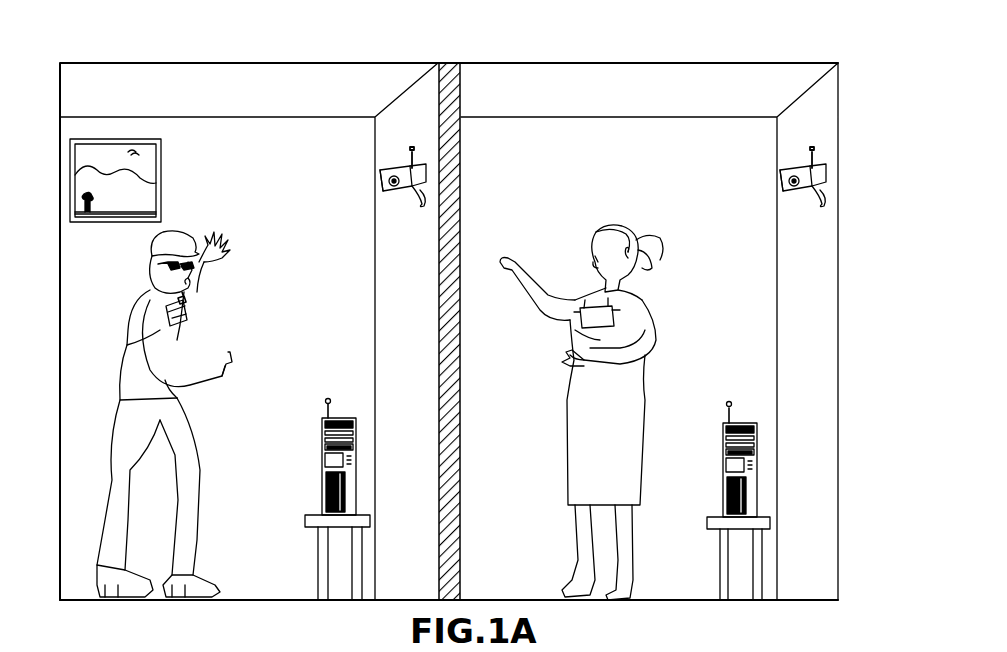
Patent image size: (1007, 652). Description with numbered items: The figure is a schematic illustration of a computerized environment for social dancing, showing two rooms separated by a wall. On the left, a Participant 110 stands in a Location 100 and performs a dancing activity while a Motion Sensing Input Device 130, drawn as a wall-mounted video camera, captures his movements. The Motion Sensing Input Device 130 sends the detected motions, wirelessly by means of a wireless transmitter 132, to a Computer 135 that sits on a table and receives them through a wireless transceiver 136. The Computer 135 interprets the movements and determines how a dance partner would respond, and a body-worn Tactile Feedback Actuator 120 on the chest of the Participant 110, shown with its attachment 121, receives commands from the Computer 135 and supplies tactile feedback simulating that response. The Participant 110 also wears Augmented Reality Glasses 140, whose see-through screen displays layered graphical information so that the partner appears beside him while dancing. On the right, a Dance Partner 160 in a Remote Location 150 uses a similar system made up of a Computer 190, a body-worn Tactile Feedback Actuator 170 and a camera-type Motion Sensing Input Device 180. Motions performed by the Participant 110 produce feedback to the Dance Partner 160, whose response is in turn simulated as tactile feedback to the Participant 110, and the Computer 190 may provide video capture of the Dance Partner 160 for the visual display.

The location 100 is at (268, 60).
The participant 110 is at (183, 230).
The tactile feedback actuator 120 is at (186, 326).
The device clip/attachment 121 is at (188, 298).
The motion sensing input device 130 is at (363, 182).
The wireless transmitter 132 is at (411, 151).
The computer 135 is at (322, 452).
The wireless transceiver 136 is at (330, 405).
The augmented reality glasses 140 is at (160, 264).
The remote location 150 is at (718, 60).
The dance partner 160 is at (640, 238).
The tactile feedback actuator 170 is at (582, 322).
The motion sensing input device 180 is at (797, 192).
The computer 190 is at (723, 462).